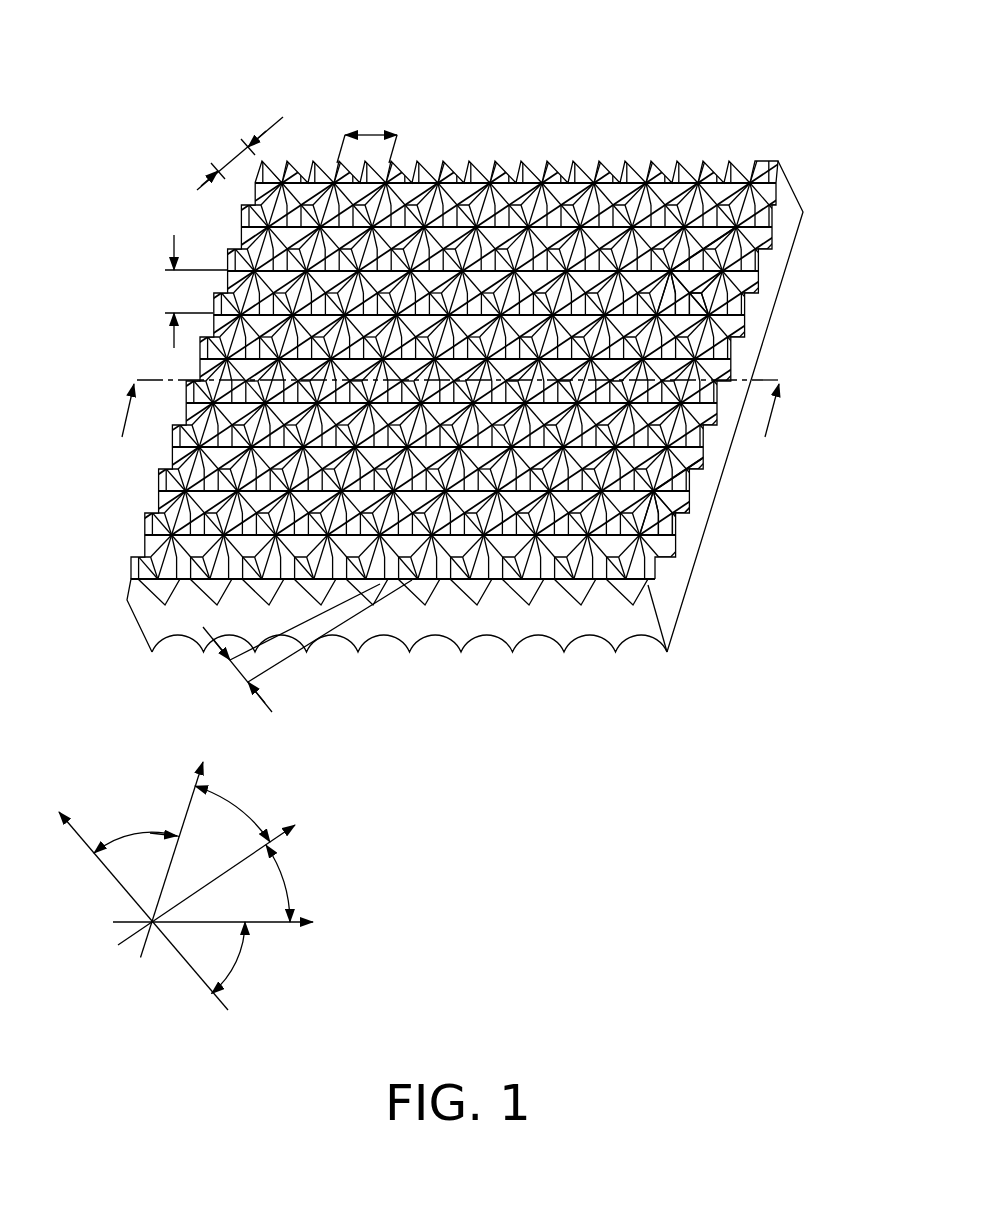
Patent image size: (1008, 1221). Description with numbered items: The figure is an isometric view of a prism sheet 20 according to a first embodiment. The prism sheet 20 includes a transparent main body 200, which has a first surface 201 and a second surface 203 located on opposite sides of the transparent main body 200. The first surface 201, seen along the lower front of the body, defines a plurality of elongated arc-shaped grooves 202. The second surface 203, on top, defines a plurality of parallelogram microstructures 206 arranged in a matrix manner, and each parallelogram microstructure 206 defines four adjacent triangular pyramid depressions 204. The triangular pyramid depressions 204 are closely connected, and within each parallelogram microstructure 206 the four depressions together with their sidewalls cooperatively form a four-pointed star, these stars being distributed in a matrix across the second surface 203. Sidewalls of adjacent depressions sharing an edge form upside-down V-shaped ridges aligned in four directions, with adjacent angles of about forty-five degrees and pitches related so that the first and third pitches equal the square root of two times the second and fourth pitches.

The prism sheet 20 is at (428, 72).
The transparent main body 200 is at (783, 215).
The first surface 201 is at (513, 656).
The elongated arc-shaped grooves 202 is at (638, 651).
The second surface 203 is at (684, 486).
The triangular pyramid depressions 204 is at (690, 307).
The parallelogram microstructures 206 is at (687, 292).